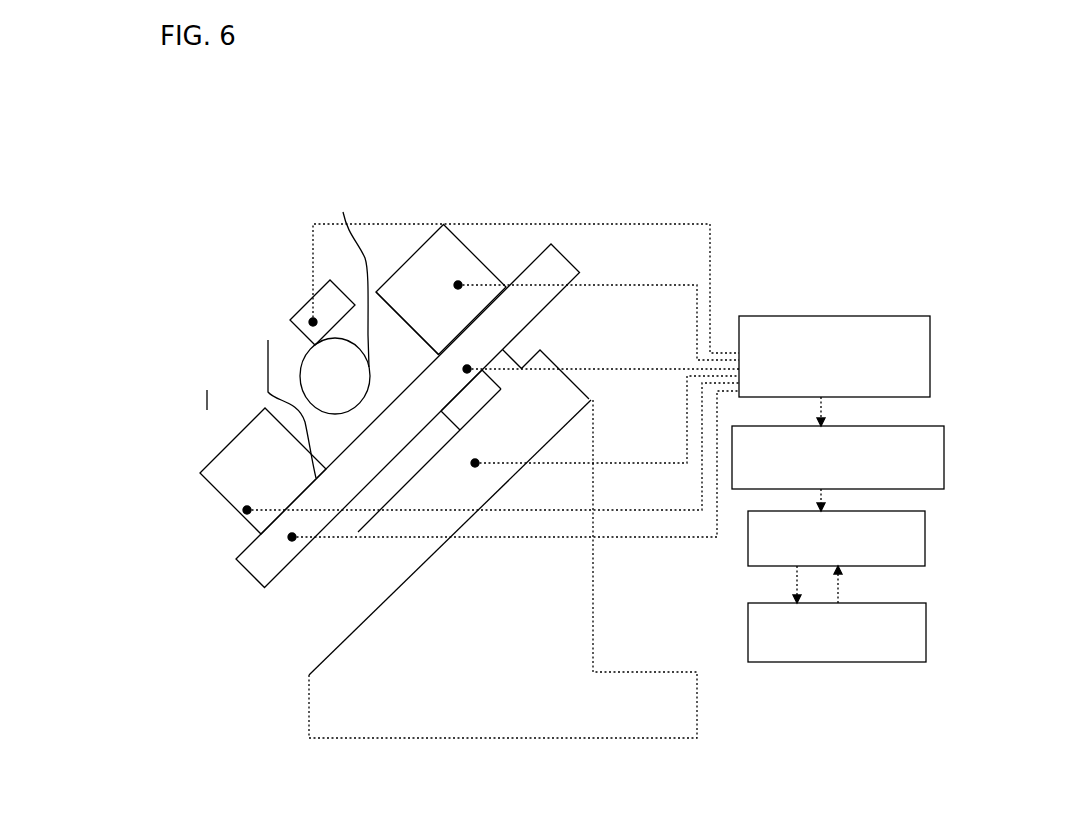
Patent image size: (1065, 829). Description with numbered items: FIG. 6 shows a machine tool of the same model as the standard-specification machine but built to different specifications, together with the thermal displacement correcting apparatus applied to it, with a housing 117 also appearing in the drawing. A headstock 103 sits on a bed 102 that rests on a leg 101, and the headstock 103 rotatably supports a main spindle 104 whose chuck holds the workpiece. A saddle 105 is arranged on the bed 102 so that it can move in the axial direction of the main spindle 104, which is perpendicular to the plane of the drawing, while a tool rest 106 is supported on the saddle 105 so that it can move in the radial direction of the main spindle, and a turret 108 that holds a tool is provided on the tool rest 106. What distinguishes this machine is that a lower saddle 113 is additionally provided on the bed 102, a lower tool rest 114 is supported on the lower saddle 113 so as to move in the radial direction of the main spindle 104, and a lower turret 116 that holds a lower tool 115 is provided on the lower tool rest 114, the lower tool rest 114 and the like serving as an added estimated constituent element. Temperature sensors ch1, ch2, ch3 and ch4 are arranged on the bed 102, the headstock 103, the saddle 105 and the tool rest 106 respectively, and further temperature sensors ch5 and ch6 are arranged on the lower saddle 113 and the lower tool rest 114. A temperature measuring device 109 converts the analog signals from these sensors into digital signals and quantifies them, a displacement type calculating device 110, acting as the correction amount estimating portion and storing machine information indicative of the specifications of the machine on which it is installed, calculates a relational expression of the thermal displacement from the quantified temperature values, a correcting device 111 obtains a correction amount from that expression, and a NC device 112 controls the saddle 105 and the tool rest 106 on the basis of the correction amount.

The leg 101 is at (433, 635).
The bed 102 is at (447, 497).
The headstock 103 is at (313, 235).
The main spindle 104 is at (320, 364).
The saddle 105 is at (551, 244).
The tool rest 106 is at (418, 240).
The turret 108 is at (385, 245).
The temperature measuring device 109 is at (930, 350).
The displacement type calculating device 110 is at (944, 447).
The correcting device 111 is at (923, 512).
The NC device 112 is at (905, 600).
The lower saddle 113 is at (266, 625).
The lower tool rest 114 is at (252, 537).
The lower tool 115 is at (266, 368).
The lower turret 116 is at (243, 422).
The housing 117 is at (337, 277).
The temperature sensor ch1 is at (477, 465).
The temperature sensor ch2 is at (311, 320).
The temperature sensor ch3 is at (467, 367).
The temperature sensor ch4 is at (458, 283).
The temperature sensor ch5 is at (293, 545).
The temperature sensor ch6 is at (262, 550).